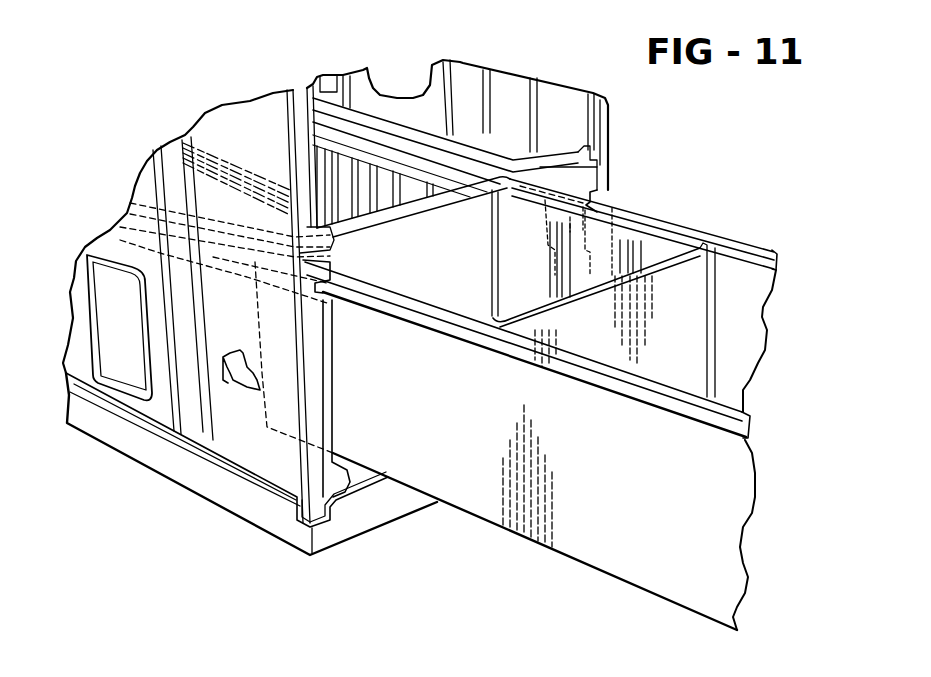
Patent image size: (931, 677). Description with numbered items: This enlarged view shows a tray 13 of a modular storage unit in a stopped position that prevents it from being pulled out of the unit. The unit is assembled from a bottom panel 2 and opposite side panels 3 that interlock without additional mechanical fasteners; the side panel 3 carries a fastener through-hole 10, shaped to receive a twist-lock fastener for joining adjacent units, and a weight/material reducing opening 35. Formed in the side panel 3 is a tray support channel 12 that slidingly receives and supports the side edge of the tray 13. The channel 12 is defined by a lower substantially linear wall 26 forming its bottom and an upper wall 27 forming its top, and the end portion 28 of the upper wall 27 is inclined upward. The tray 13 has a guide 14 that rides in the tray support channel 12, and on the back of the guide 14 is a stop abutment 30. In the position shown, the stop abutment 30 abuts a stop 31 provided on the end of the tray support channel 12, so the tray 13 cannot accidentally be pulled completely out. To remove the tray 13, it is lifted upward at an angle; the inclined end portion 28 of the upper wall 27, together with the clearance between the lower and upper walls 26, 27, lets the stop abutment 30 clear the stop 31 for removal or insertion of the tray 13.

The bottom panel 2 is at (226, 498).
The side panel 3 is at (236, 125).
The fastener through-hole 10 is at (240, 377).
The tray support channel 12 is at (577, 182).
The tray 13 is at (643, 472).
The guide 14 is at (742, 252).
The lower wall 26 is at (410, 160).
The upper wall 27 is at (396, 117).
The end portion 28 is at (560, 155).
The stop abutment 30 is at (543, 197).
The stop 31 is at (318, 282).
The weight/material reducing opening 35 is at (133, 337).